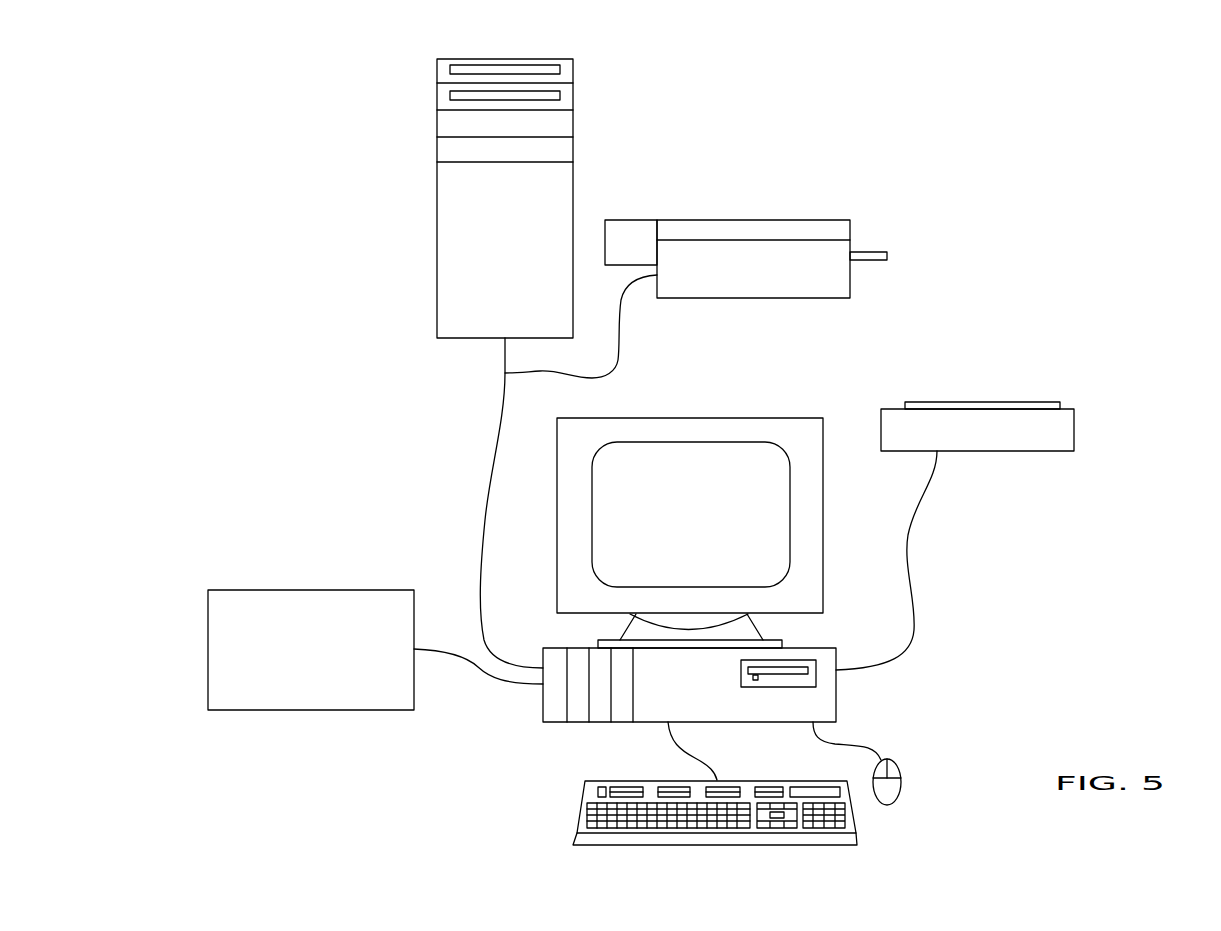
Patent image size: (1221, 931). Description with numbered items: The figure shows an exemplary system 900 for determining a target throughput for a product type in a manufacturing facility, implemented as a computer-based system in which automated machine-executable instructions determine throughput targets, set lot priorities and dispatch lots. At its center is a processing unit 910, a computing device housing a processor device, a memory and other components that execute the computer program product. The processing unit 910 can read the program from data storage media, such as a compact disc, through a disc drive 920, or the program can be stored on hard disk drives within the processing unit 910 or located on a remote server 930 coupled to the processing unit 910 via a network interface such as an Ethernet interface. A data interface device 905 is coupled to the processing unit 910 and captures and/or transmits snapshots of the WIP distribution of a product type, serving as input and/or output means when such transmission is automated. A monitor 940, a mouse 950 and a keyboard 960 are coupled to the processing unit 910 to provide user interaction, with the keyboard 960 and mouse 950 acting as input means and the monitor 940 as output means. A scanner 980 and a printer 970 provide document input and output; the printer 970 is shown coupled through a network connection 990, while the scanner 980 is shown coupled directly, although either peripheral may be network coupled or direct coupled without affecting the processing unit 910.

The exemplary system 900 is at (1005, 112).
The data interface device 905 is at (340, 661).
The processing unit 910 is at (543, 694).
The disc drive 920 is at (560, 69).
The server 930 is at (573, 180).
The monitor 940 is at (772, 418).
The mouse 950 is at (894, 805).
The keyboard 960 is at (572, 808).
The printer 970 is at (808, 220).
The scanner 980 is at (1022, 409).
The cable / network connection 990 is at (500, 408).